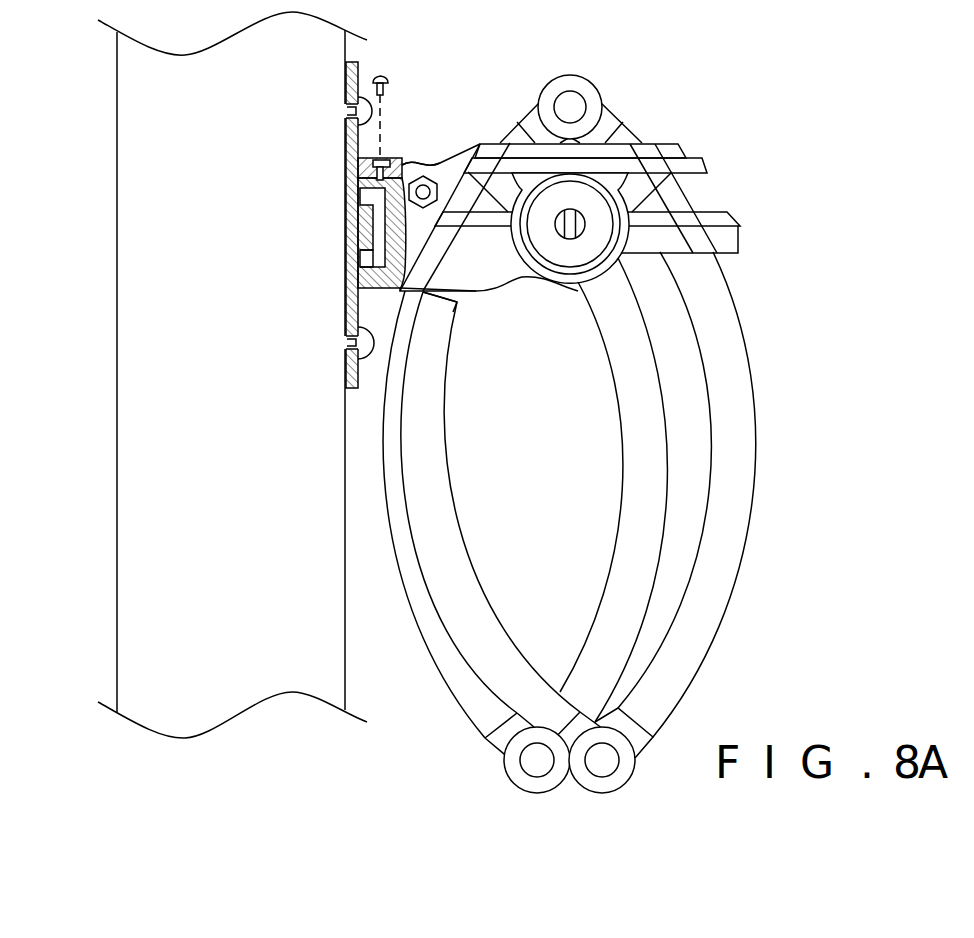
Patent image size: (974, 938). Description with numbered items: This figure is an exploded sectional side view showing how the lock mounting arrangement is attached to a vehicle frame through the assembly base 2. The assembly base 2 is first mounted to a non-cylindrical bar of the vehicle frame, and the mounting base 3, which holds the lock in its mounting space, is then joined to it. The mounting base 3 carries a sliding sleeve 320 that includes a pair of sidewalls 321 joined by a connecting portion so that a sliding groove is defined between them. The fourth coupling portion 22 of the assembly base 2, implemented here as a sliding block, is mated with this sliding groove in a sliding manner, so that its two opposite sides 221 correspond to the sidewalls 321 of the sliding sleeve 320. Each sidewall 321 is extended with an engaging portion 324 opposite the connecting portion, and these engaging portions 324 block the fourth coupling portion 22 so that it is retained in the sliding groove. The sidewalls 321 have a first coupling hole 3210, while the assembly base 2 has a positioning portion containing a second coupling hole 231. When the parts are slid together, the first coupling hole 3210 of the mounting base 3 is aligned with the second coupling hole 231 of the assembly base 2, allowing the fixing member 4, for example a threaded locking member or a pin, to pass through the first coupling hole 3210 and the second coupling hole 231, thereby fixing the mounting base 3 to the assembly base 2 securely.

The assembly base 2 is at (340, 264).
The fourth coupling portion 22 is at (370, 229).
The slot 221 is at (375, 200).
The second coupling hole 231 is at (396, 160).
The mounting base 3 is at (727, 184).
The sliding sleeve 320 is at (383, 297).
The sidewall 321 is at (370, 178).
The engaging portion 324 is at (363, 262).
The first coupling hole 3210 is at (428, 163).
The fixing member 4 is at (381, 74).